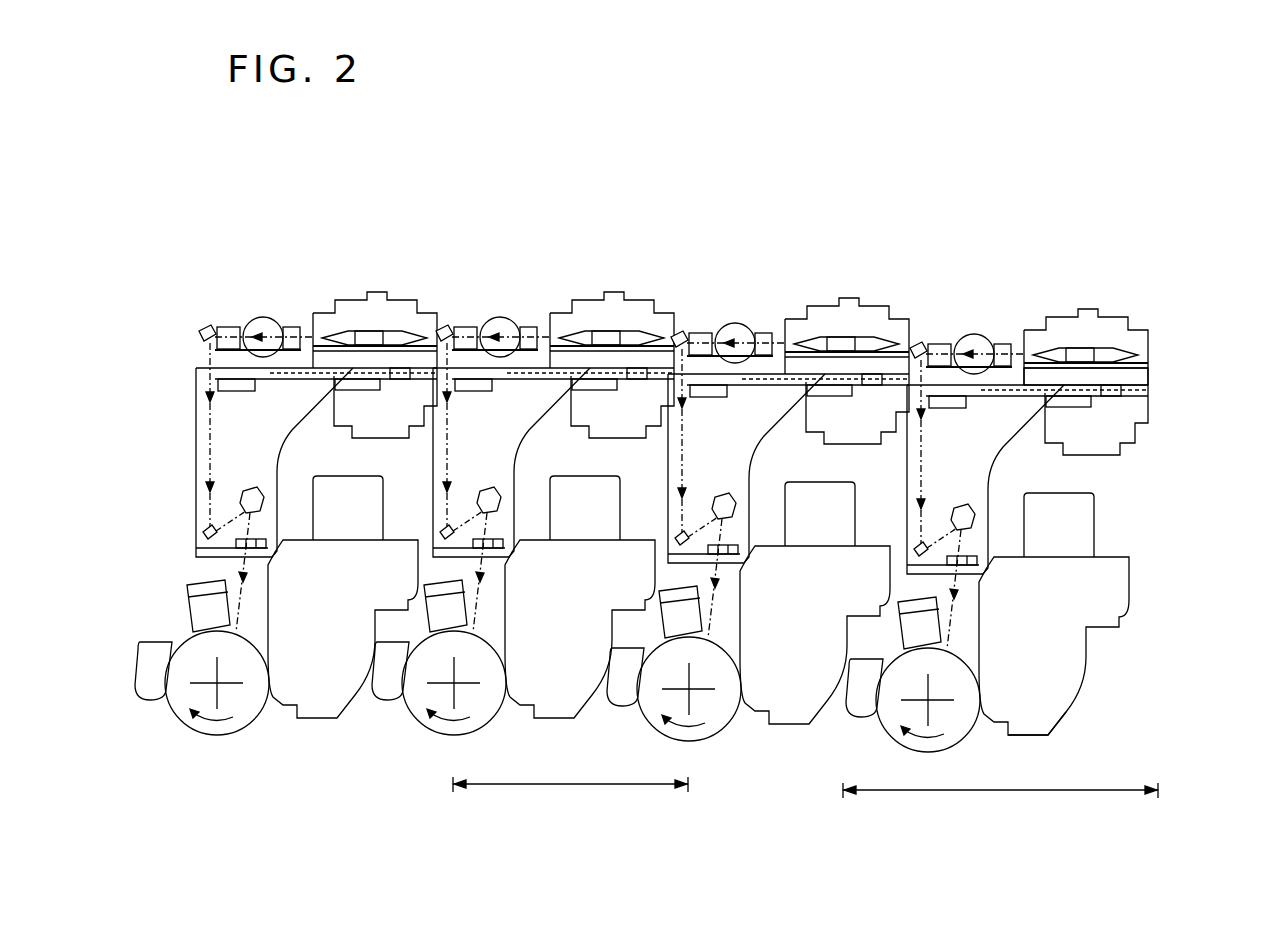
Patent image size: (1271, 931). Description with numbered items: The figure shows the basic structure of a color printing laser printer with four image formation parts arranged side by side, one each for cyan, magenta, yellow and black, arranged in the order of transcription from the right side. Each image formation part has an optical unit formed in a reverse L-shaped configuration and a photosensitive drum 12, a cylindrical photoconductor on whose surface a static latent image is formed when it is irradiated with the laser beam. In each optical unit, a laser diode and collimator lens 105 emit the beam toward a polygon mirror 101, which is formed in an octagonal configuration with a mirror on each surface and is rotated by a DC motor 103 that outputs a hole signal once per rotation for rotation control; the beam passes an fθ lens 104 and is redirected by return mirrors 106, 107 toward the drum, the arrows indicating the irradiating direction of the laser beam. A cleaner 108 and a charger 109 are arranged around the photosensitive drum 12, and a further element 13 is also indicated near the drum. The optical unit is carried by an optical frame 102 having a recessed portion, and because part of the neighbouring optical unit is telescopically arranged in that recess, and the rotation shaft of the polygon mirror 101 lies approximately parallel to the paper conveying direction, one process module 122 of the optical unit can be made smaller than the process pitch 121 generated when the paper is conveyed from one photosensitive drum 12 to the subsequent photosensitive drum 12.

The polygon mirror 101 is at (1110, 355).
The optical frame 102 is at (1127, 388).
The DC motor 103 is at (1100, 432).
The fθ lens 104 is at (1015, 353).
The laser diode and collimator lens 105 is at (975, 348).
The return mirror 106 is at (912, 633).
The return mirror 107 is at (968, 522).
The cleaner 108 is at (945, 733).
The charger 109 is at (1060, 607).
The photosensitive drum 12 is at (983, 720).
The cleaning device 13 is at (860, 690).
The process pitch 121 is at (552, 784).
The process module 122 is at (993, 790).